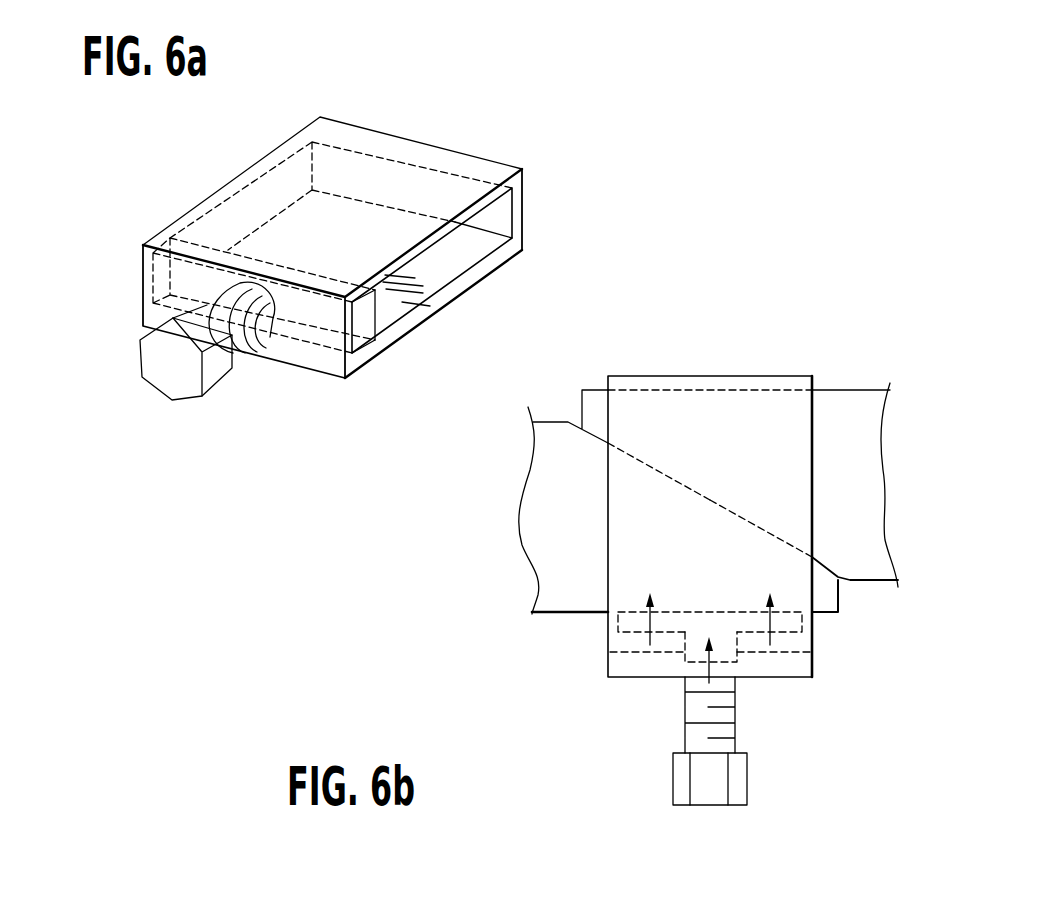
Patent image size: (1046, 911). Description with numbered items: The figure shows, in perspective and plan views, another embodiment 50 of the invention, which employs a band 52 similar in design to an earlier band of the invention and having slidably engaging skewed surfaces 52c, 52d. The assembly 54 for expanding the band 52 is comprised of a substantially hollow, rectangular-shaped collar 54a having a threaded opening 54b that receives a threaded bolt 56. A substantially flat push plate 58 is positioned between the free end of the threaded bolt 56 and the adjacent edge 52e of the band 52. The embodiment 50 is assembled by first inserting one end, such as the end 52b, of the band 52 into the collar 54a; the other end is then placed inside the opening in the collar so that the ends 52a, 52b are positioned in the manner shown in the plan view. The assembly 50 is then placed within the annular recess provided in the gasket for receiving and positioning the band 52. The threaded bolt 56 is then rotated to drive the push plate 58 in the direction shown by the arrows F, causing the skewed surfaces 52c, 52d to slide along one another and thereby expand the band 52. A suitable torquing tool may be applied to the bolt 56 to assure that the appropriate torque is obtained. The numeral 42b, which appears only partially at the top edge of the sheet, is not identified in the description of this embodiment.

In FIG. 6a, the embodiment 50 is at (298, 83).
In FIG. 6a, the assembly for expanding band 54 is at (460, 122).
In FIG. 6a, the collar 54a is at (230, 182).
In FIG. 6a, the threaded opening 54b is at (276, 318).
In FIG. 6a, the threaded bolt 56 is at (188, 398).
In FIG. 6b, the threaded bolt 56 is at (672, 778).
In FIG. 6a, the push plate 58 is at (373, 323).
In FIG. 6a, the flange 42b is at (512, 7).
In FIG. 6b, the band 52 is at (596, 370).
In FIG. 6b, the end of band 52a is at (633, 565).
In FIG. 6b, the end of band 52b is at (743, 418).
In FIG. 6b, the skewed surface 52c is at (672, 486).
In FIG. 6b, the skewed surface 52d is at (752, 519).
In FIG. 6b, the edge of band 52e is at (553, 613).
In FIG. 6b, the arrows indicating direction of push plate movement F is at (650, 645).